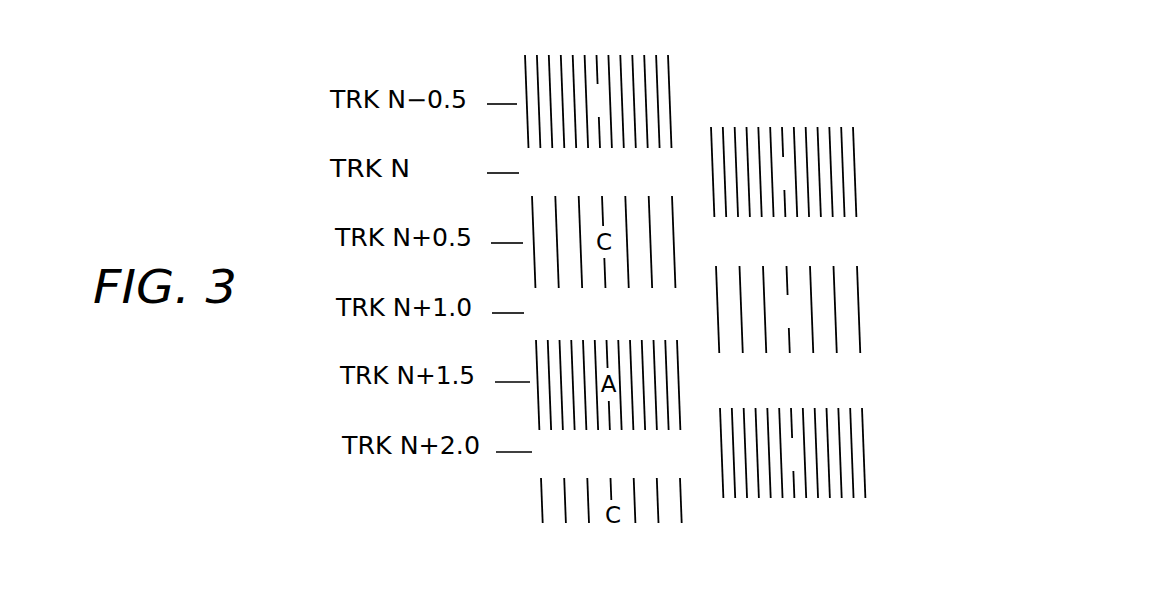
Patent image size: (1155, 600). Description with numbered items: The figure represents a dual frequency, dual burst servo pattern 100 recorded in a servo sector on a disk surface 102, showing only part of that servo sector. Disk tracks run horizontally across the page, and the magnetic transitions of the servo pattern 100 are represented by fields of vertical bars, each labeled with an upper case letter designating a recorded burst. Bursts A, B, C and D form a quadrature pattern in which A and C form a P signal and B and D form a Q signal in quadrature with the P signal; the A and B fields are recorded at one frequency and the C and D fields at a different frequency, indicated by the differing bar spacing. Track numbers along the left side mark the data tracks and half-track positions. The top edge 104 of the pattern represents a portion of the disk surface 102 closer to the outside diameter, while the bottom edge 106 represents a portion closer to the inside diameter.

The dual frequency, dual burst servo pattern 100 is at (853, 143).
The disk surface 102 is at (858, 289).
The top edge 104 is at (667, 65).
The bottom edge 106 is at (862, 424).